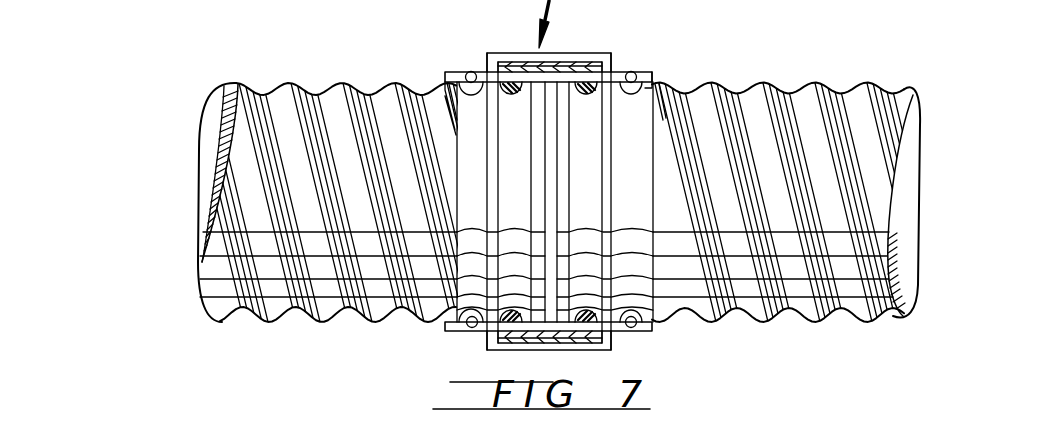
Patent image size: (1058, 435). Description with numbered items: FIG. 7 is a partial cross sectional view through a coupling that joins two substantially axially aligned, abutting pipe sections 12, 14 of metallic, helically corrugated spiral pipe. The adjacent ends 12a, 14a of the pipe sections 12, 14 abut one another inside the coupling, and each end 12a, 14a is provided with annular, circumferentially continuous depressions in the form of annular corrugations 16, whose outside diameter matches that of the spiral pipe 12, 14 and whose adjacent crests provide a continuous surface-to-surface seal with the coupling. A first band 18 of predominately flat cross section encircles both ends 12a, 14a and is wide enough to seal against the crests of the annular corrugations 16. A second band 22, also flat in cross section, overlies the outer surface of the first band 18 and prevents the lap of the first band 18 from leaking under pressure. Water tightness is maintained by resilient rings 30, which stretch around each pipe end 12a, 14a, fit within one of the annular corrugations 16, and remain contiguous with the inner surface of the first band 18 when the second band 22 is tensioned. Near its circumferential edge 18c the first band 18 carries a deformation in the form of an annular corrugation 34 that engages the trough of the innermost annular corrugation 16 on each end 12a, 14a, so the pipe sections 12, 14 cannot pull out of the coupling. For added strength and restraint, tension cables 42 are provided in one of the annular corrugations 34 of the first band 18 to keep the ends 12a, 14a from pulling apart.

The pipe section 12 is at (295, 97).
The end of pipe section 12a is at (495, 258).
The pipe section 14 is at (760, 138).
The end of pipe section 14a is at (610, 168).
The annular corrugation 16 is at (590, 102).
The first band 18 is at (508, 77).
The circumferential edge of first band 18c is at (652, 72).
The second band 22 is at (550, 68).
The resilient ring 30 is at (594, 70).
The annular corrugation 34 is at (464, 80).
The tension cable 42 is at (473, 70).